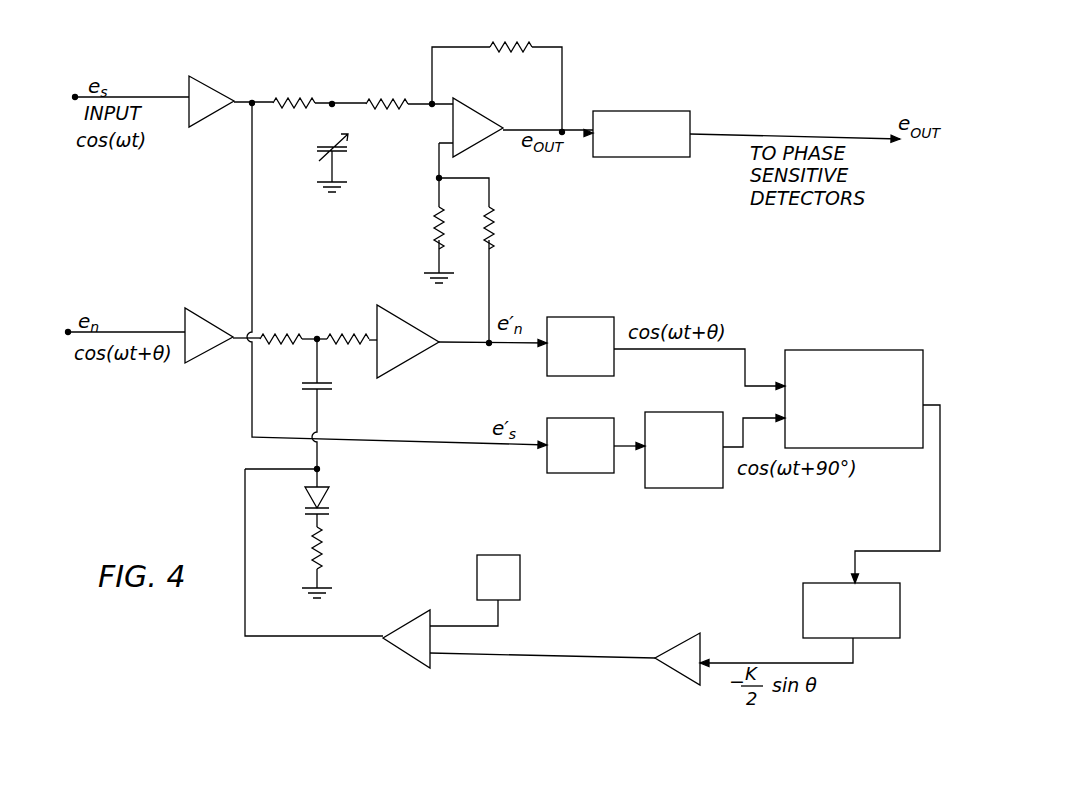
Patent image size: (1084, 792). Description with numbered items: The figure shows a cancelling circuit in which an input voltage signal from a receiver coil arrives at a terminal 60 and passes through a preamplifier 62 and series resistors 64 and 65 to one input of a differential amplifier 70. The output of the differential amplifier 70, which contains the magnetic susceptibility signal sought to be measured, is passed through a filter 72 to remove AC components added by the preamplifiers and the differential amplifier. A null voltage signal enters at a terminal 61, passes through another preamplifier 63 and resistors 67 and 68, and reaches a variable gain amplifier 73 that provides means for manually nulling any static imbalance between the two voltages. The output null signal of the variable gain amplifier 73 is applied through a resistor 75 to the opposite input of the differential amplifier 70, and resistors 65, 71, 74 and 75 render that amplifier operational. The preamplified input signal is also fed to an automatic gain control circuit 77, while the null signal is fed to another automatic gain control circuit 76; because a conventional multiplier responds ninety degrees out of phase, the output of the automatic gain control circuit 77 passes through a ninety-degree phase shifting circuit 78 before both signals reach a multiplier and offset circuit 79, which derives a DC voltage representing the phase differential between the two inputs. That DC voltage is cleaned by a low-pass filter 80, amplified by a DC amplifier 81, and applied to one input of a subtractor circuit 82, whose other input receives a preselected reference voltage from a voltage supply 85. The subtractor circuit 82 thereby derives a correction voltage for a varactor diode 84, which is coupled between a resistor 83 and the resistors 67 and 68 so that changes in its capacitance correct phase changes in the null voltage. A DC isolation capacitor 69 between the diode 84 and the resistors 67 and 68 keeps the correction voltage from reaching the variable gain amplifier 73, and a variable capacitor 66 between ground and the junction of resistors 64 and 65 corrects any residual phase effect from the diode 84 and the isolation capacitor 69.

The terminal 60 is at (75, 97).
The terminal 61 is at (68, 332).
The preamplifier 62 is at (207, 82).
The preamplifier 63 is at (200, 310).
The resistor 64 is at (297, 95).
The resistor 65 is at (383, 98).
The variable capacitor 66 is at (348, 150).
The resistor 67 is at (283, 330).
The resistor 68 is at (340, 330).
The DC isolation capacitor 69 is at (322, 390).
The differential amplifier 70 is at (476, 115).
The resistor 71 is at (520, 45).
The filter 72 is at (649, 110).
The variable gain amplifier 73 is at (418, 352).
The resistor 74 is at (432, 222).
The resistor 75 is at (499, 222).
The automatic gain control circuit 76 is at (586, 317).
The automatic gain control circuit 77 is at (580, 476).
The 90° phase shifting circuit 78 is at (684, 490).
The multiplier and offset circuit 79 is at (883, 350).
The low-pass filter 80 is at (803, 590).
The DC amplifier 81 is at (668, 672).
The subtractor circuit 82 is at (405, 652).
The resistor 83 is at (322, 550).
The varactor diode 84 is at (328, 504).
The voltage supply 85 is at (521, 575).